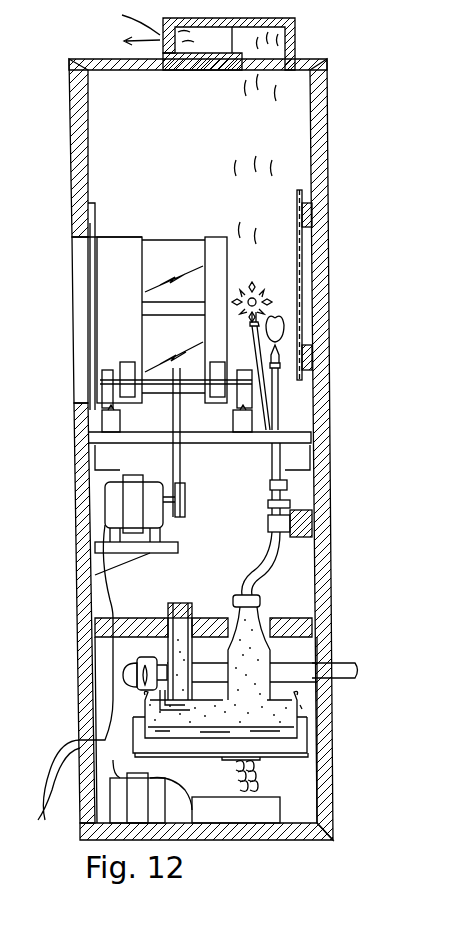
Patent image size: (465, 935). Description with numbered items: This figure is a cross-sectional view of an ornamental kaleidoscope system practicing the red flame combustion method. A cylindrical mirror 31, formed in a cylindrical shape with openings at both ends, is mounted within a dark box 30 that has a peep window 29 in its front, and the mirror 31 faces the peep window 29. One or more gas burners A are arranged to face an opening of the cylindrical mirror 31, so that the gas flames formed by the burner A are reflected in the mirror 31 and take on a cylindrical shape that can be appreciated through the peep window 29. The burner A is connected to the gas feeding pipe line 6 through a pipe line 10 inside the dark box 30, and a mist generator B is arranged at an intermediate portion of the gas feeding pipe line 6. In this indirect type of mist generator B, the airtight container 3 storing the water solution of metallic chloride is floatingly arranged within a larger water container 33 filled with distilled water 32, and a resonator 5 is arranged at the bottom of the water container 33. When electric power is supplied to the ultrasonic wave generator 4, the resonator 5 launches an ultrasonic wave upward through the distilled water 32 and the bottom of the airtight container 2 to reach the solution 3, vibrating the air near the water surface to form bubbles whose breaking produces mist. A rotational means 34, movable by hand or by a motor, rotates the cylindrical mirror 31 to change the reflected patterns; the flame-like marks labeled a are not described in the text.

The dark box 30 is at (73, 136).
The peep window 29 is at (80, 318).
The cylindrical mirror 31 is at (165, 240).
The rotational means 34 is at (192, 475).
The pipe line 10 is at (270, 387).
The flower / plant a is at (250, 292).
The gas burner A is at (280, 351).
The gas feeding pipe line 6 is at (343, 668).
The airtight container 2 is at (300, 690).
The airtight container storing water solution of metallic chloride 3 is at (297, 730).
The mist generator B is at (313, 711).
The distilled water 32 is at (290, 745).
The water container 33 is at (190, 755).
The resonator 5 is at (258, 765).
The ultrasonic wave generator 4 is at (245, 812).